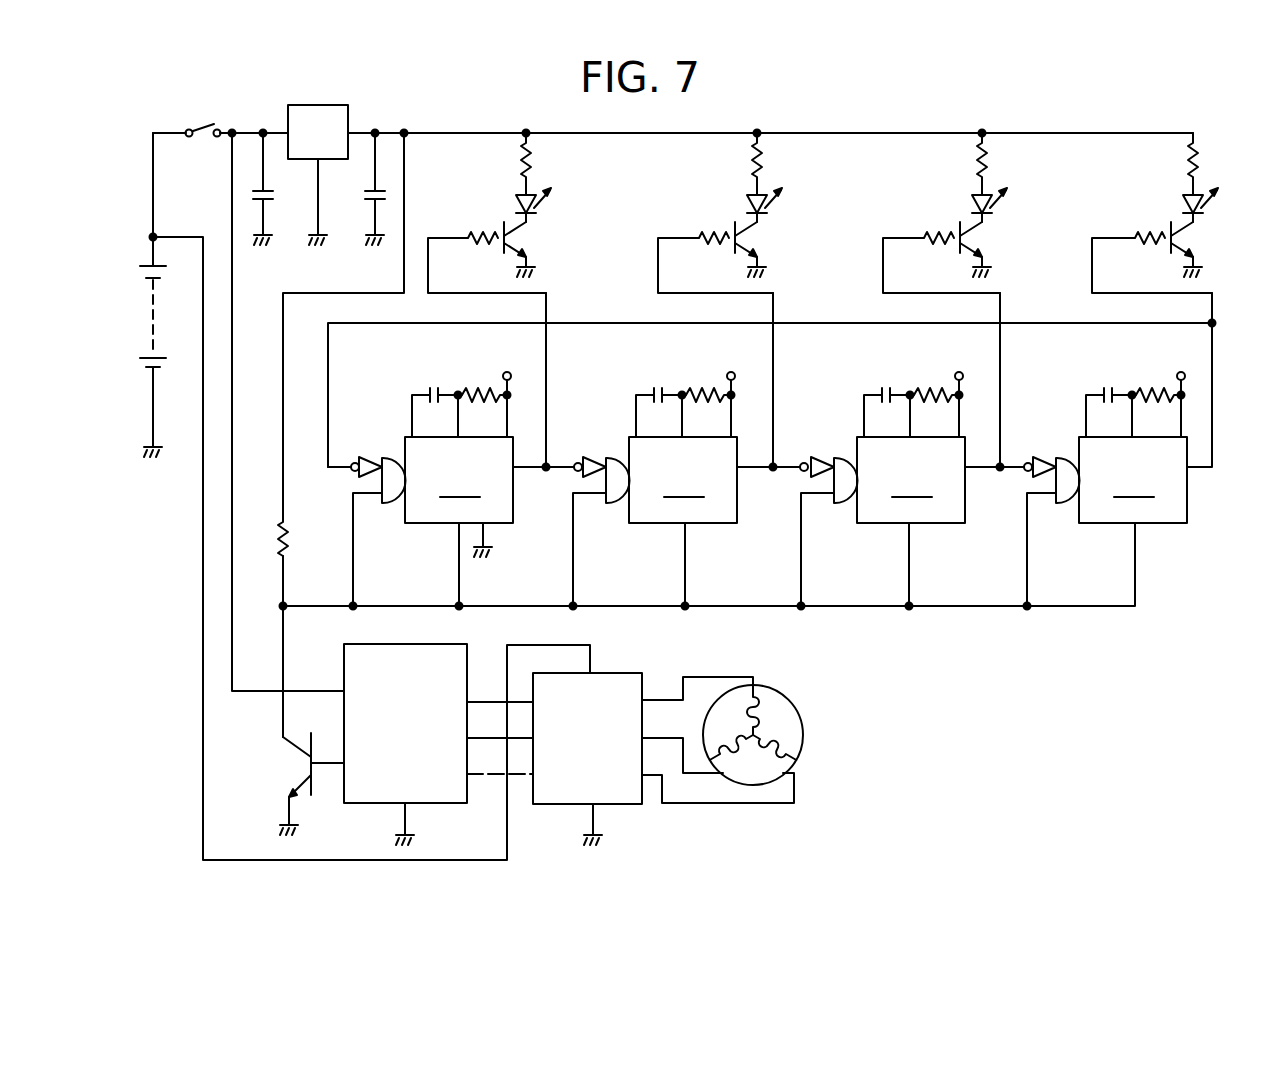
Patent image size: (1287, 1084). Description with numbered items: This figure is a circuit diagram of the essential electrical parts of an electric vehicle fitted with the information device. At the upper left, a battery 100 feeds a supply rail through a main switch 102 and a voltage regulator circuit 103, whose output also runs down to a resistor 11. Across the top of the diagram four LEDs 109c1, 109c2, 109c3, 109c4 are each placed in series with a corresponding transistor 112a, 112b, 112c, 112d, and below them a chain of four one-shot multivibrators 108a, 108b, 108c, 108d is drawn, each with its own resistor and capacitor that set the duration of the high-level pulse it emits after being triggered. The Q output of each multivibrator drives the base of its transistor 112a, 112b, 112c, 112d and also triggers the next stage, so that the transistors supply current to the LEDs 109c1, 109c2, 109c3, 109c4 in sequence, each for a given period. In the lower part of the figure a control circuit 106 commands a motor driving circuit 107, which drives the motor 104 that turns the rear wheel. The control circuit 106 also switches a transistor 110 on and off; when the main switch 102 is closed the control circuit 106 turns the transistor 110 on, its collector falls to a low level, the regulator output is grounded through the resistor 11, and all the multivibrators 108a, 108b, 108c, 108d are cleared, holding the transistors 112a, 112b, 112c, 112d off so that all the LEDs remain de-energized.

The battery 100 is at (152, 370).
The main switch 102 is at (206, 123).
The voltage regulator circuit 103 is at (350, 120).
The motor 104 is at (804, 728).
The control circuit 106 is at (466, 672).
The motor driving circuit 107 is at (622, 672).
The one-shot multivibrator 108a is at (402, 439).
The one-shot multivibrator 108b is at (623, 439).
The one-shot multivibrator 108c is at (851, 439).
The one-shot multivibrator 108d is at (1076, 439).
The LED 109c1 is at (519, 193).
The LED 109c2 is at (750, 193).
The LED 109c3 is at (976, 193).
The LED 109c4 is at (1186, 193).
The transistor 110 is at (299, 754).
The resistor 11 is at (292, 546).
The transistor 112a is at (518, 245).
The transistor 112b is at (740, 245).
The transistor 112c is at (962, 245).
The transistor 112d is at (1178, 245).